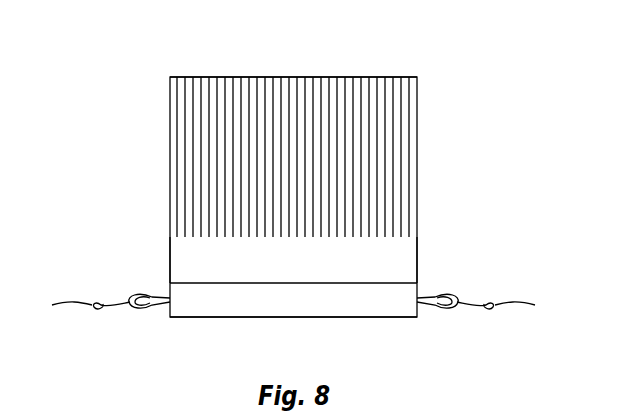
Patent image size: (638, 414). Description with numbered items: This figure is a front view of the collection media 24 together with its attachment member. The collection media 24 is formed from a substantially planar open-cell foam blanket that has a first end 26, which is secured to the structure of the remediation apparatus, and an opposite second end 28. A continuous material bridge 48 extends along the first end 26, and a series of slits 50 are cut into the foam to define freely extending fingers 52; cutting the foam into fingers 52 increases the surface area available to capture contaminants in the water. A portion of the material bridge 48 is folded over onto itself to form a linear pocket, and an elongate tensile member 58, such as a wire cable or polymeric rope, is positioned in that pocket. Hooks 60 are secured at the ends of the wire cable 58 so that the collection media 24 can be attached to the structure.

The collection media 24 is at (424, 193).
The first end 26 is at (382, 317).
The second end 28 is at (388, 77).
The material bridge 48 is at (187, 255).
The slits 50 is at (272, 96).
The fingers 52 is at (222, 88).
The elongate tensile member 58 is at (133, 295).
The hooks 60 is at (290, 305).